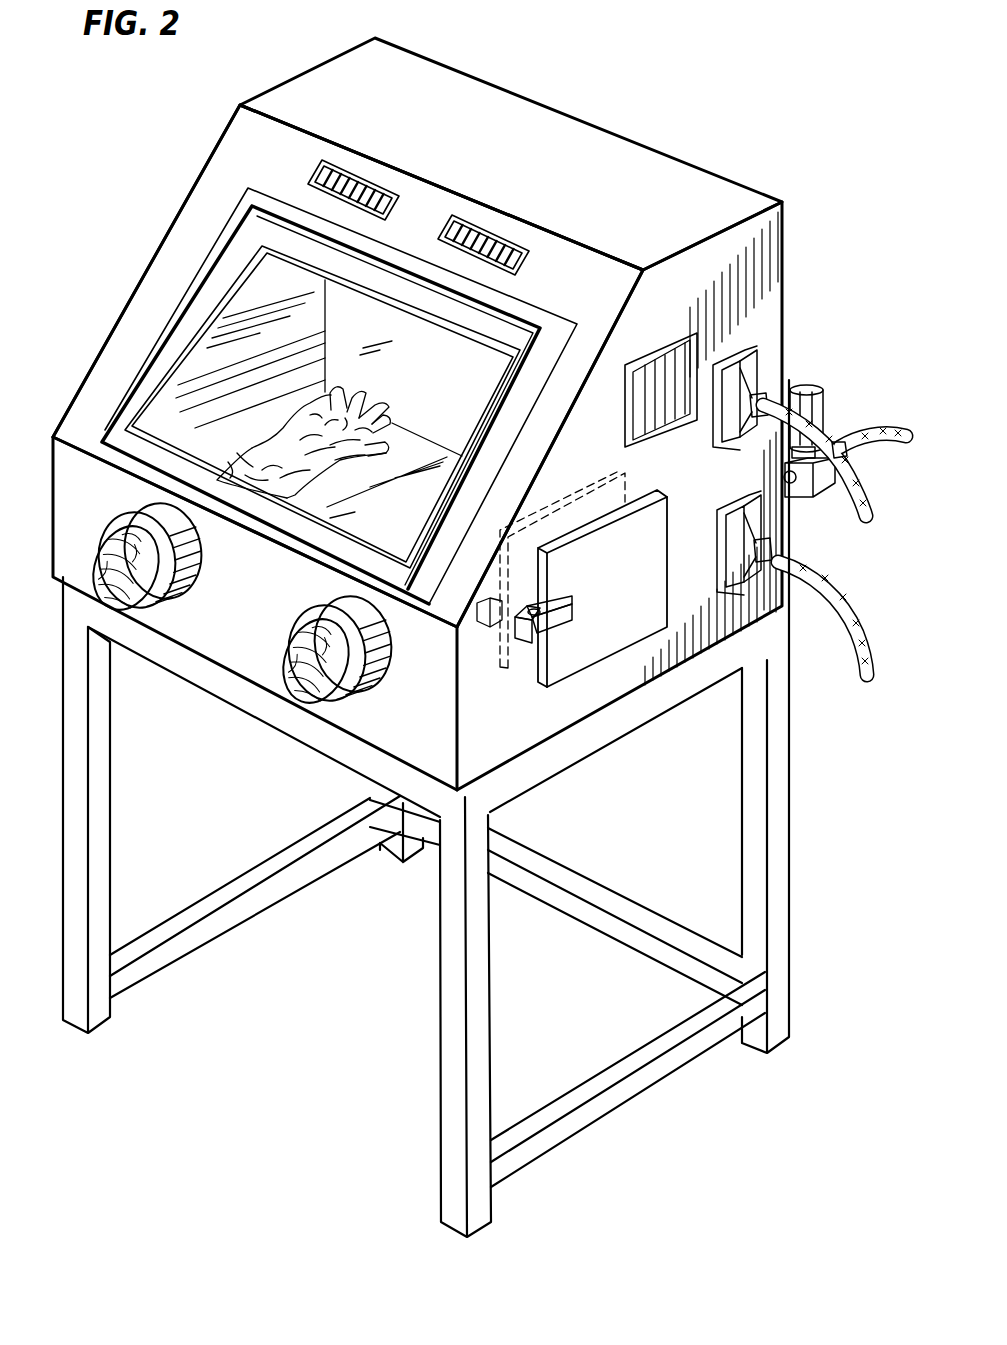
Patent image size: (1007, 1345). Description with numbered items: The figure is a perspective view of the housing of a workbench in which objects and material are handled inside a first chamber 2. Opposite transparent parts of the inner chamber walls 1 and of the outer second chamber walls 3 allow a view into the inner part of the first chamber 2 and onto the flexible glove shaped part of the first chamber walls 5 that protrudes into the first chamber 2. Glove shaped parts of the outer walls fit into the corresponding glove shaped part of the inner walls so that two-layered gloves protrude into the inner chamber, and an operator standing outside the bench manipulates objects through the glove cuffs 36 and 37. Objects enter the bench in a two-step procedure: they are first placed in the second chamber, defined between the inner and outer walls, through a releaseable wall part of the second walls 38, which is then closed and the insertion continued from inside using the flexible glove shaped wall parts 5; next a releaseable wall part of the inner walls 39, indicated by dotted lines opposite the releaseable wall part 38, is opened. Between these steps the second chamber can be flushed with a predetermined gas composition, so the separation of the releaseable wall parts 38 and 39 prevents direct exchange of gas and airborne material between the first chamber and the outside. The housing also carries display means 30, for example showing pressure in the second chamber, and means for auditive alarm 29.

The inner chamber walls 1 is at (265, 345).
The first chamber 2 is at (420, 375).
The outer second chamber walls 3 is at (195, 420).
The flexible glove shaped part of the first chamber walls 5 is at (240, 447).
The means for auditive alarm 29 is at (667, 372).
The display means 30 is at (407, 194).
The glove cuff 36 is at (106, 527).
The glove cuff 37 is at (305, 640).
The releaseable wall part of the second walls 38 is at (604, 624).
The releaseable wall part of the inner walls 39 is at (525, 652).